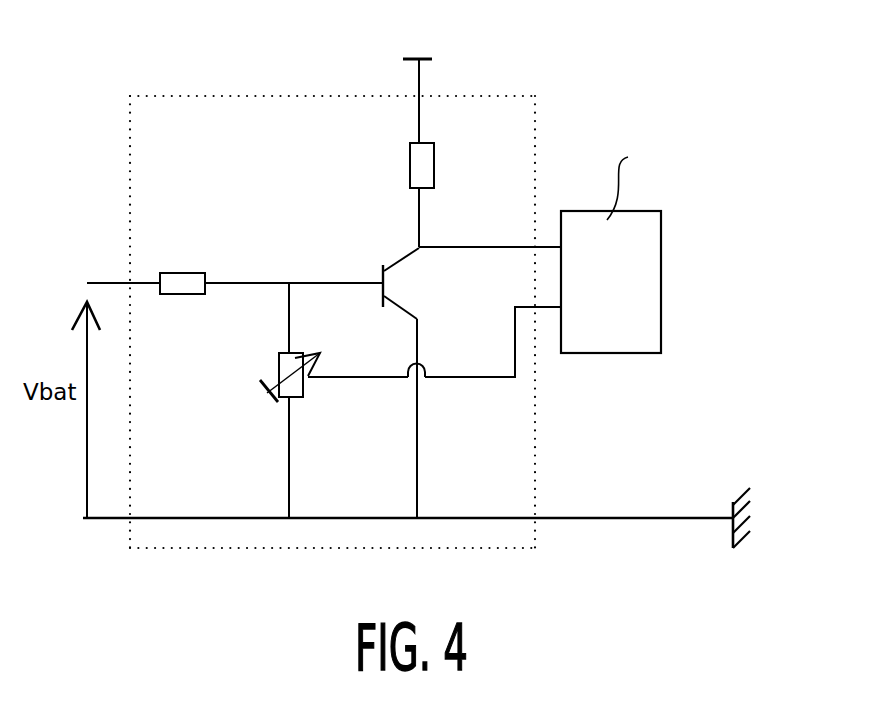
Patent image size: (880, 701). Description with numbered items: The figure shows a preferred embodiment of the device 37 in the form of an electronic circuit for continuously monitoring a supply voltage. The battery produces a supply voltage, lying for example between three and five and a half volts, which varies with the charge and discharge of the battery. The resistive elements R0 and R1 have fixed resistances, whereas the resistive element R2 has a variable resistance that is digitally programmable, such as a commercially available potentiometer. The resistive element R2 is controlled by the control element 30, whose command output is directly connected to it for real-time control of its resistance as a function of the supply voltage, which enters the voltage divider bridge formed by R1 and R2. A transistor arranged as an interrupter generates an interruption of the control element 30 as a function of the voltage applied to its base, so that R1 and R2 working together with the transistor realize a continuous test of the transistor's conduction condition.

The device 37 is at (362, 285).
The control element 30 is at (661, 297).
The resistive element R0 is at (400, 165).
The resistive element R1 is at (182, 267).
The resistive element R2 is at (276, 377).